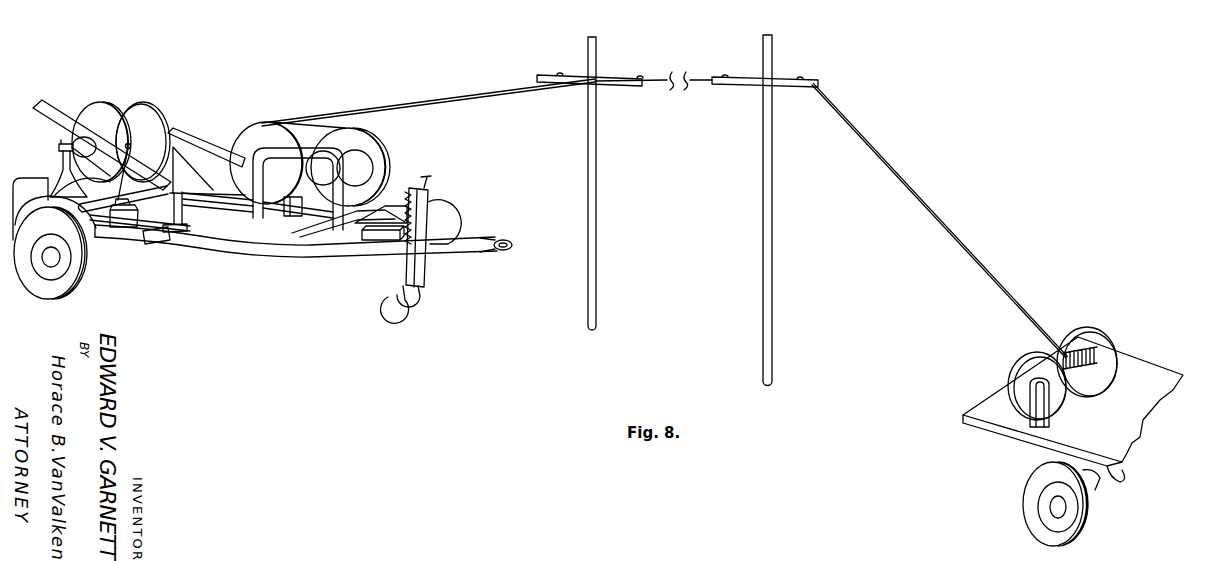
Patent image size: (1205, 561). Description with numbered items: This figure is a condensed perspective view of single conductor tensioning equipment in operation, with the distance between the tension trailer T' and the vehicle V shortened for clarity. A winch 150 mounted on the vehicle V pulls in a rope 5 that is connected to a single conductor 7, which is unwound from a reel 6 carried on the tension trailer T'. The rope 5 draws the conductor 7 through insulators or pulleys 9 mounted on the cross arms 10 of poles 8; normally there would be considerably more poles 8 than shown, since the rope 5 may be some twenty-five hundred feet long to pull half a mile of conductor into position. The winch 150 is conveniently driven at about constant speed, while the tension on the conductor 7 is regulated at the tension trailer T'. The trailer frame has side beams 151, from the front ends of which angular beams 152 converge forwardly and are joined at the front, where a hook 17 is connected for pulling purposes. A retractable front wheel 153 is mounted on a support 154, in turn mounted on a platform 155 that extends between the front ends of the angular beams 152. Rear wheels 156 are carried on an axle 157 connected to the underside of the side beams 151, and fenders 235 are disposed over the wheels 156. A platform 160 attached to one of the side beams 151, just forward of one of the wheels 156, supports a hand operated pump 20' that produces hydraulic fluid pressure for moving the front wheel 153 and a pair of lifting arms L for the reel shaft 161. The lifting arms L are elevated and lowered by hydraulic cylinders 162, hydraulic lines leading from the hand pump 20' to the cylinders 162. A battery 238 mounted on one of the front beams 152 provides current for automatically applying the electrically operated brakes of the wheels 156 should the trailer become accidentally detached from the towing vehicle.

The tension trailer T' is at (276, 168).
The lifting arms L is at (49, 112).
The reel 6 is at (133, 103).
The conductor 7 is at (405, 89).
The poles 8 is at (592, 218).
The insulators or pulleys 9 is at (641, 77).
The cross arms 10 is at (638, 85).
The rope 5 is at (1018, 300).
The winch 150 is at (1083, 328).
The vehicle V is at (1041, 464).
The hook 17 is at (503, 239).
The side beams 151 is at (386, 216).
The angular beams 152 is at (462, 250).
The retractable front wheel 153 is at (393, 296).
The support 154 is at (437, 207).
The platform 155 is at (441, 240).
The rear wheels 156 is at (57, 292).
The axle 157 is at (146, 243).
The platform 160 is at (175, 234).
The reel shaft 161 is at (59, 150).
The hydraulic cylinders 162 is at (86, 166).
The fenders 235 is at (80, 214).
The battery 238 is at (367, 241).
The hand pump 20' is at (137, 216).